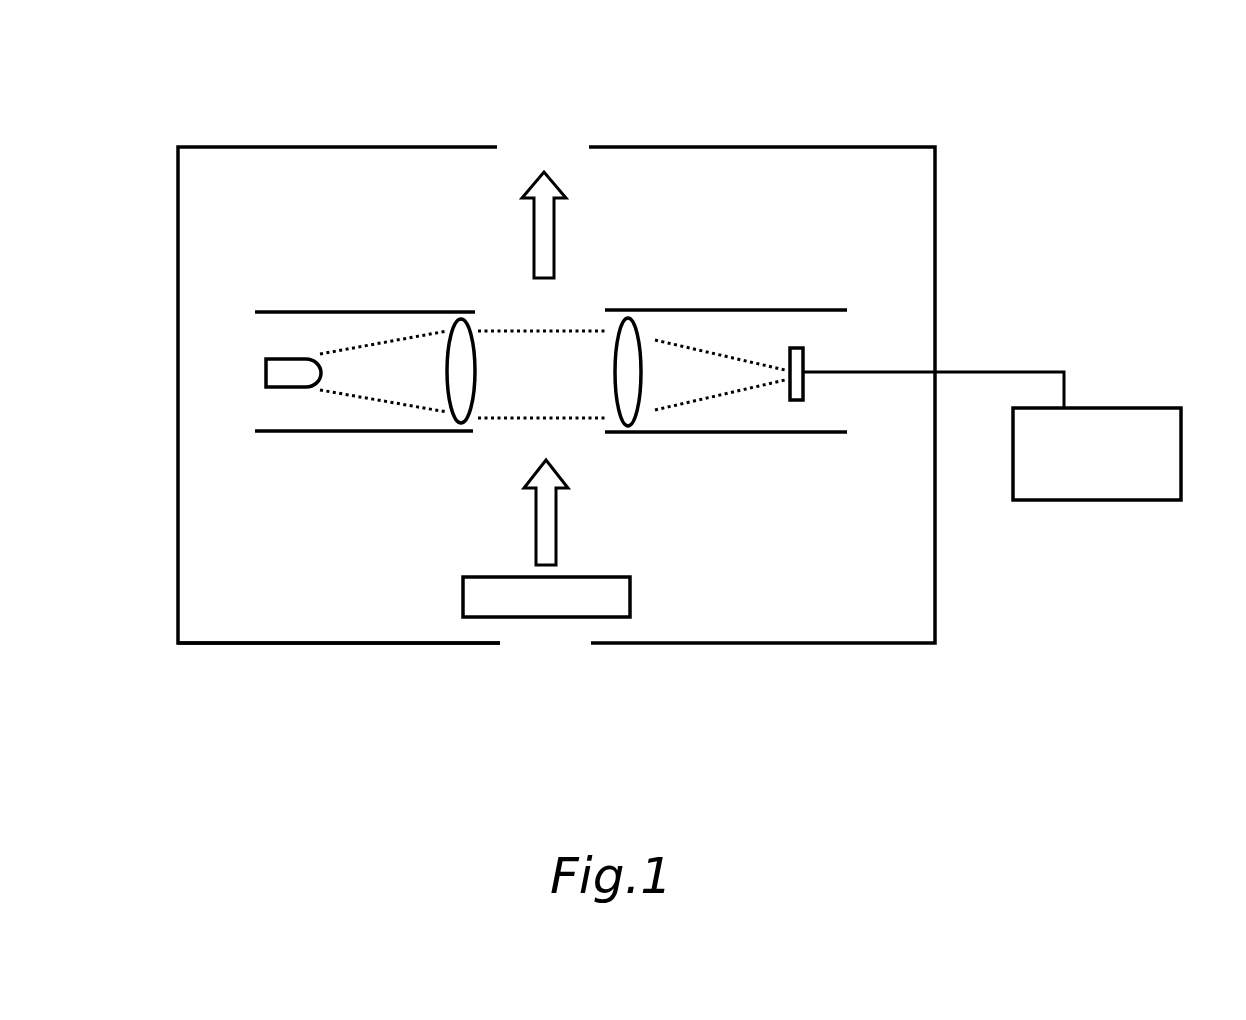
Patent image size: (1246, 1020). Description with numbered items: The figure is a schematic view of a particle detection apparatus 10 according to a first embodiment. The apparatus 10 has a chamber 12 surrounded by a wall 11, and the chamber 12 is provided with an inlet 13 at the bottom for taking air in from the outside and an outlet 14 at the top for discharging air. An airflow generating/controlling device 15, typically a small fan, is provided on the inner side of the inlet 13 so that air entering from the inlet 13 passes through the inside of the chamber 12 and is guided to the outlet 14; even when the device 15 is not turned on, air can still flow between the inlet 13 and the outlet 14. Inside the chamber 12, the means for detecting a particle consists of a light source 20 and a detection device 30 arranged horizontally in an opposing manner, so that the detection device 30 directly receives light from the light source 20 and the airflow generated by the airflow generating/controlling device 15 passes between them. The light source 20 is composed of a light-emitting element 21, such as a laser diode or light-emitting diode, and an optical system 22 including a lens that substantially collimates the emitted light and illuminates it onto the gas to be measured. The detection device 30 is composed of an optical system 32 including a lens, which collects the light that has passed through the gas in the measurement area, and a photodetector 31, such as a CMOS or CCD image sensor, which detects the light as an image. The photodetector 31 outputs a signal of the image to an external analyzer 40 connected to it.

The apparatus 10 is at (1050, 153).
The wall 11 is at (297, 645).
The chamber 12 is at (640, 212).
The inlet 13 is at (540, 643).
The outlet 14 is at (524, 145).
The airflow generating/controlling device 15 is at (605, 591).
The light source 20 is at (348, 292).
The light-emitting element 21 is at (280, 372).
The optical system 22 is at (458, 318).
The detection device 30 is at (703, 290).
The photodetector 31 is at (797, 355).
The optical system 32 is at (628, 398).
The analyzer 40 is at (1128, 420).